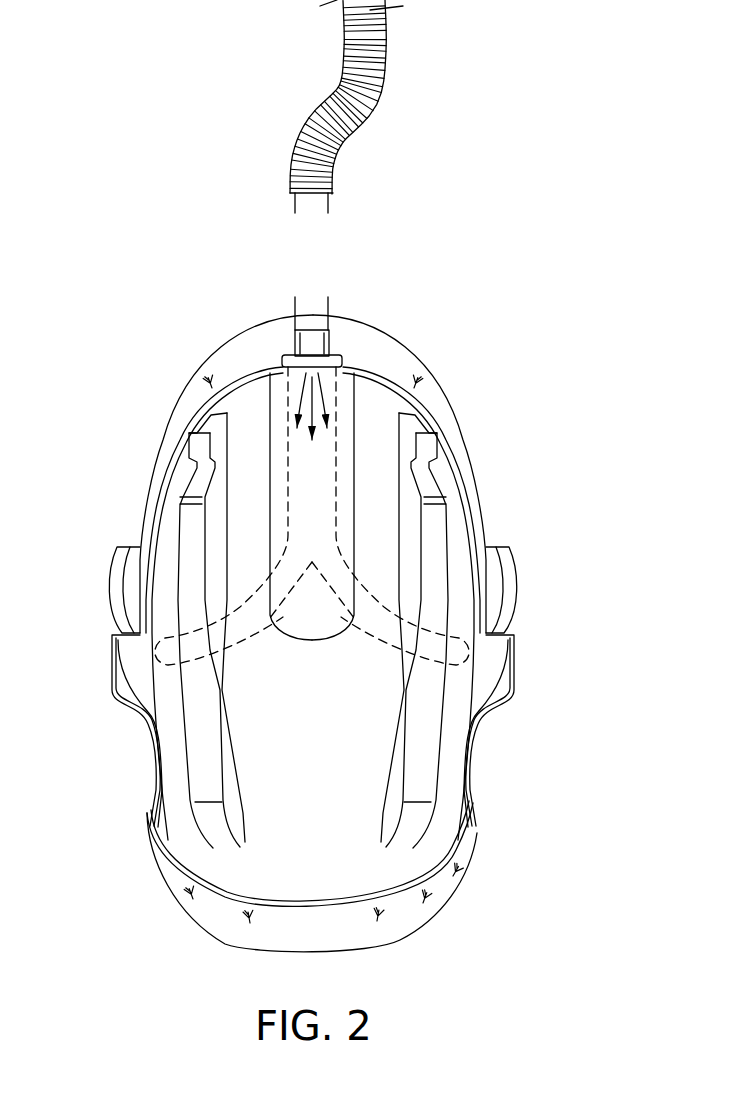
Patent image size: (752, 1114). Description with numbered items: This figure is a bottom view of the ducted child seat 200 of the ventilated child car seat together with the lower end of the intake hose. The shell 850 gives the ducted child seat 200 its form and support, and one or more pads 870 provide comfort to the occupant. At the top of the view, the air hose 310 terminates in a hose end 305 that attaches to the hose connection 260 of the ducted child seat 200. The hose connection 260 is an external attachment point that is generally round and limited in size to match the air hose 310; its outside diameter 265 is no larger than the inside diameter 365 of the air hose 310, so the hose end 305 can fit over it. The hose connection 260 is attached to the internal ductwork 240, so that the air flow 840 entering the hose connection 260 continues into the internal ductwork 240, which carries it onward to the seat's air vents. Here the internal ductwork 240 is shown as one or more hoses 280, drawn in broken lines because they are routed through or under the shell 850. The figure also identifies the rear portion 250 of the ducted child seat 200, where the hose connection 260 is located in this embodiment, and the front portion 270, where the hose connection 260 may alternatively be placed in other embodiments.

The ducted child seat 200 is at (147, 727).
The internal ductwork 240 is at (352, 373).
The rear portion 250 is at (568, 297).
The hose connection 260 is at (293, 345).
The outside diameter 265 is at (233, 312).
The front portion 270 is at (568, 843).
The hoses 280 is at (335, 608).
The hose end 305 is at (272, 166).
The air hose 310 is at (384, 70).
The inside diameter 365 is at (233, 203).
The air flow 840 is at (300, 403).
The shell 850 is at (438, 765).
The pads 870 is at (437, 919).